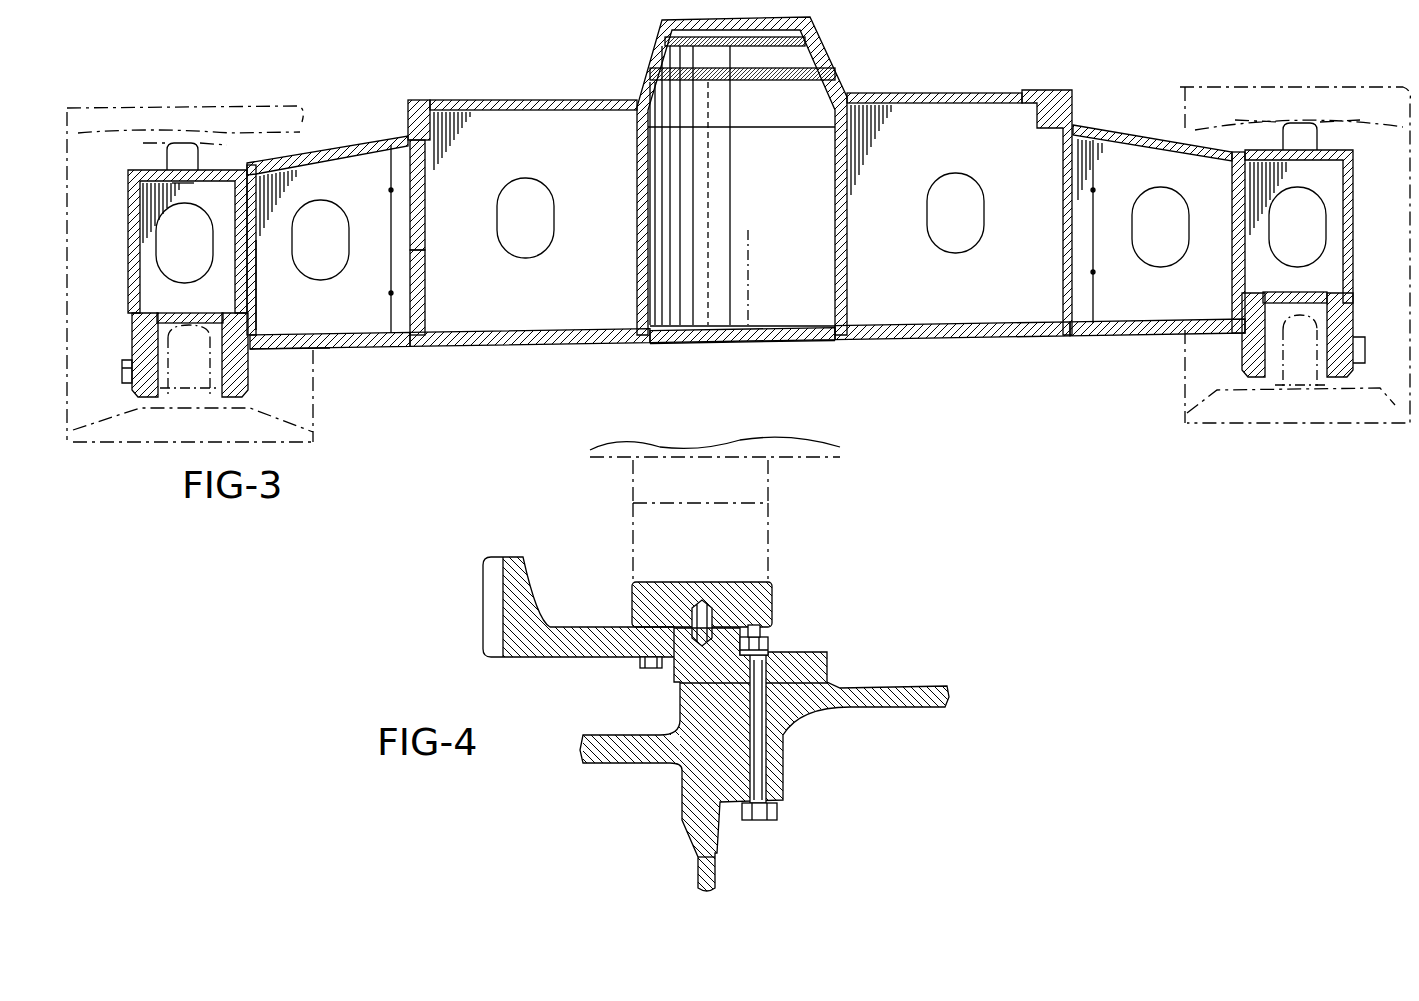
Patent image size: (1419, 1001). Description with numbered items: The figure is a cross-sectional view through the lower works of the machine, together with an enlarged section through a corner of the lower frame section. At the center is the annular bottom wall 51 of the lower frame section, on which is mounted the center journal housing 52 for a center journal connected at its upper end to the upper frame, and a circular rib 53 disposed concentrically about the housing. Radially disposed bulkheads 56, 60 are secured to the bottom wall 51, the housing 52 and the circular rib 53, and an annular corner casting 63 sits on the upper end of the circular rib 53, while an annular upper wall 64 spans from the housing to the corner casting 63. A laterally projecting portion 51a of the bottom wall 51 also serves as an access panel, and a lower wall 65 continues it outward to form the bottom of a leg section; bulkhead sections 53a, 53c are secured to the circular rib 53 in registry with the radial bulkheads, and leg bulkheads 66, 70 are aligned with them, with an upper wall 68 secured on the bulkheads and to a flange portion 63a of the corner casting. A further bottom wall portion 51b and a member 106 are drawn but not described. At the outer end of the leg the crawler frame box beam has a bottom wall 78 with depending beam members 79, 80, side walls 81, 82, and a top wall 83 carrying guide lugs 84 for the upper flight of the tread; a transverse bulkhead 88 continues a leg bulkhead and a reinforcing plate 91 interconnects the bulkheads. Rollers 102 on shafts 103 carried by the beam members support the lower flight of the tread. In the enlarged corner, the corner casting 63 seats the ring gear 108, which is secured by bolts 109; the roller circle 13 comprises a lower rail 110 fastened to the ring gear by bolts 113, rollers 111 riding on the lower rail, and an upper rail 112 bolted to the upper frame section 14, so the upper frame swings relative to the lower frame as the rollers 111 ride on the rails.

In FIG. 4, the roller circle 13 is at (619, 540).
In FIG. 4, the upper frame section 14 is at (853, 448).
In FIG. 3, the annular bottom wall 51 is at (505, 348).
In FIG. 3, the laterally projecting portion of bottom wall 51a is at (400, 350).
In FIG. 3, the base plate section 51b is at (1070, 337).
In FIG. 3, the center journal housing 52 is at (859, 50).
In FIG. 3, the circular rib 53 is at (428, 270).
In FIG. 4, the circular rib 53 is at (717, 874).
In FIG. 3, the bulkhead section 53a is at (400, 303).
In FIG. 3, the bulkhead section 53c is at (1085, 183).
In FIG. 3, the radially disposed bulkhead 56 is at (533, 195).
In FIG. 3, the radially disposed bulkhead 60 is at (945, 283).
In FIG. 3, the annular corner casting 63 is at (442, 122).
In FIG. 4, the annular corner casting 63 is at (757, 758).
In FIG. 3, the flange portion of corner casting 63a is at (399, 137).
In FIG. 4, the flange portion of corner casting 63a is at (632, 734).
In FIG. 3, the annular upper wall 64 is at (548, 112).
In FIG. 4, the annular upper wall 64 is at (912, 687).
In FIG. 3, the lower wall 65 is at (338, 350).
In FIG. 3, the bulkhead 66 is at (327, 235).
In FIG. 3, the upper wall 68 is at (320, 166).
In FIG. 3, the bulkhead 70 is at (1195, 293).
In FIG. 3, the bottom wall 78 is at (188, 315).
In FIG. 3, the depending beam member 79 is at (132, 331).
In FIG. 3, the depending beam member 80 is at (248, 382).
In FIG. 3, the side wall 81 is at (128, 253).
In FIG. 3, the side wall 82 is at (258, 297).
In FIG. 3, the top wall 83 is at (180, 186).
In FIG. 3, the guide lug 84 is at (184, 143).
In FIG. 3, the bulkhead 88 is at (156, 286).
In FIG. 3, the reinforcing plate 91 is at (258, 218).
In FIG. 3, the roller 102 is at (185, 398).
In FIG. 3, the shaft 103 is at (122, 370).
In FIG. 3, the right end box 106 is at (1340, 187).
In FIG. 4, the ring gear 108 is at (485, 614).
In FIG. 4, the bolt 109 is at (752, 769).
In FIG. 4, the lower rail 110 is at (776, 585).
In FIG. 4, the roller 111 is at (770, 545).
In FIG. 4, the upper rail 112 is at (772, 487).
In FIG. 4, the bolt 113 is at (640, 664).